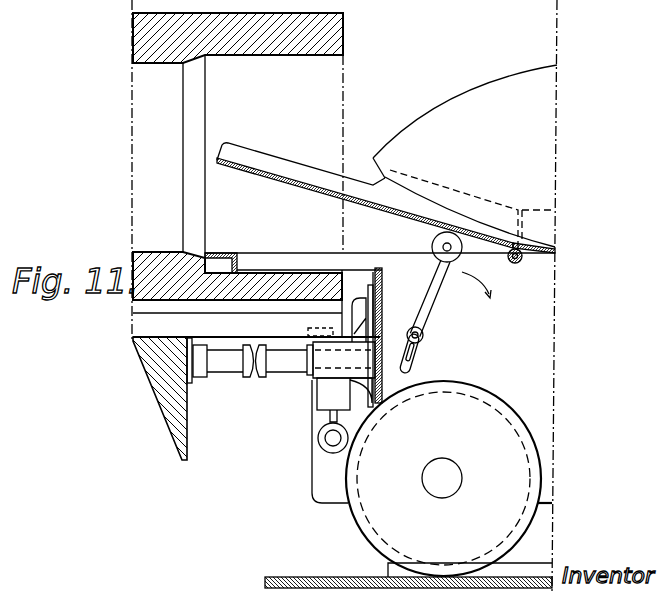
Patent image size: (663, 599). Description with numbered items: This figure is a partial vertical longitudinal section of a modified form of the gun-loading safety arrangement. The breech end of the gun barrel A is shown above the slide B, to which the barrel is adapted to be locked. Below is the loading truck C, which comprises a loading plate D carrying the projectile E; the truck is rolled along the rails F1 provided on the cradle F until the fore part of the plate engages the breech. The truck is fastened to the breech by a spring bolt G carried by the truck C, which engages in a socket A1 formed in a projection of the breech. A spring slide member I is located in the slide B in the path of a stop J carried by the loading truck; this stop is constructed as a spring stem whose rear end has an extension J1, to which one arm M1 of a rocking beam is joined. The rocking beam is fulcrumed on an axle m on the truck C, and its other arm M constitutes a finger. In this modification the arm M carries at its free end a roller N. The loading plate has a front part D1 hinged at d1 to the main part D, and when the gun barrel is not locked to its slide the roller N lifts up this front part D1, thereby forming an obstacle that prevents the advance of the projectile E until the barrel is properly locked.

The breech end of gun barrel A is at (346, 45).
The socket A1 is at (320, 332).
The slide B is at (182, 441).
The loading truck C is at (320, 477).
The loading plate D is at (543, 252).
The front part of loading plate D1 is at (285, 170).
The hinge d1 is at (512, 263).
The projectile E is at (518, 98).
The cradle F is at (408, 569).
The rails F1 is at (392, 570).
The spring bolt G is at (383, 289).
The spring slide member I is at (225, 363).
The stop J is at (283, 363).
The extension J1 is at (387, 361).
The arm of rocking beam M is at (433, 292).
The axle m is at (423, 331).
The arm of rocking beam M1 is at (418, 367).
The roller N is at (432, 241).